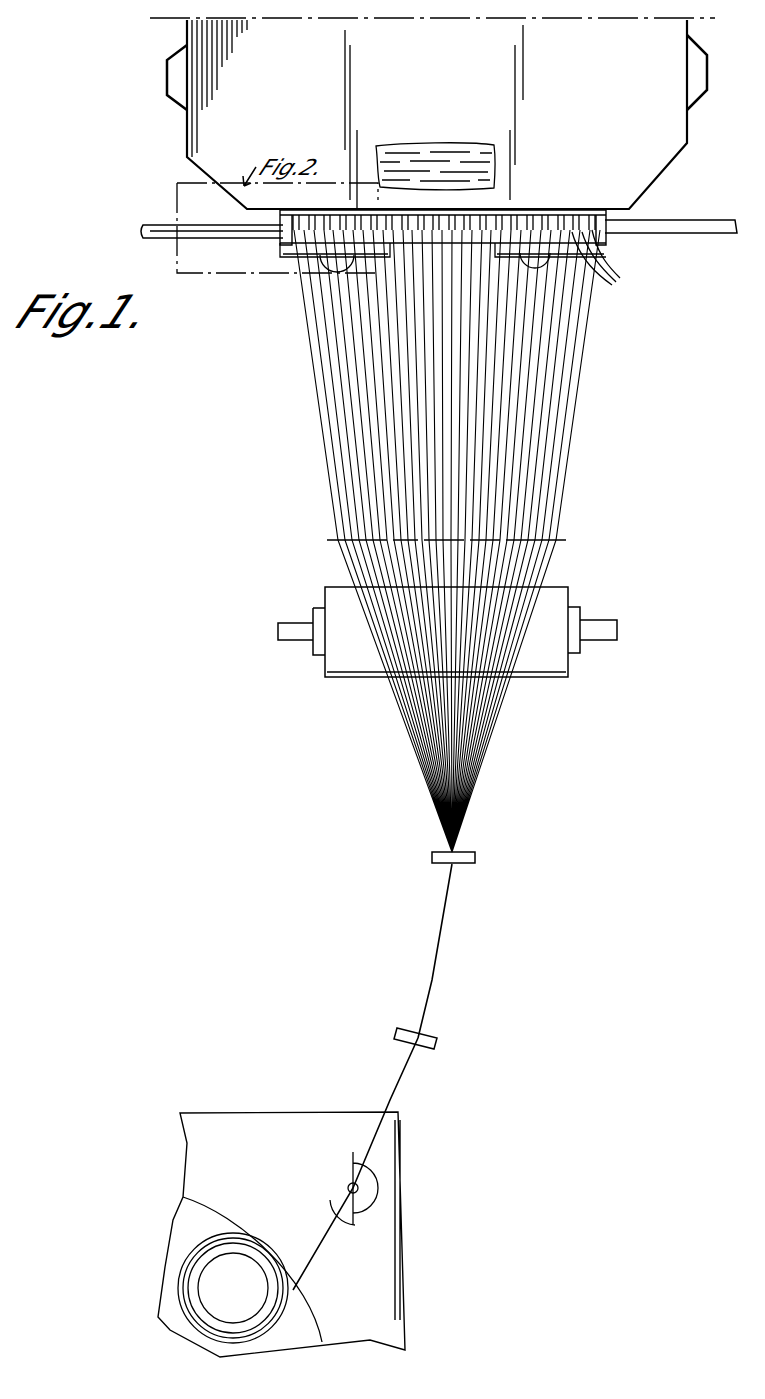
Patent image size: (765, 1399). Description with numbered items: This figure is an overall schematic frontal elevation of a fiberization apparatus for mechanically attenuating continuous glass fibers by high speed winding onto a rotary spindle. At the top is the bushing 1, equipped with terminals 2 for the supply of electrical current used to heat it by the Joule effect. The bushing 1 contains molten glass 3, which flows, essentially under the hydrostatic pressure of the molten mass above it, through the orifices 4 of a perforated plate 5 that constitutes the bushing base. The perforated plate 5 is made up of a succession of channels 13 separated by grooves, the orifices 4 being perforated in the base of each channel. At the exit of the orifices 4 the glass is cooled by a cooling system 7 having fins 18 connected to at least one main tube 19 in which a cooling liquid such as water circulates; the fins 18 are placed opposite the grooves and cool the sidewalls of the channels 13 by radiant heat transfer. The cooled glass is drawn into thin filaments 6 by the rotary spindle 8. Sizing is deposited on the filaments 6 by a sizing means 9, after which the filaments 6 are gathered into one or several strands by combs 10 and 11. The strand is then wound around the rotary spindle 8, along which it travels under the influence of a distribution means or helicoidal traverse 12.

The bushing 1 is at (445, 70).
The terminals 2 is at (186, 92).
The molten glass 3 is at (447, 165).
The orifices 4 is at (602, 267).
The perforated plate 5 is at (640, 212).
The filaments 6 is at (398, 557).
The cooling system 7 is at (283, 240).
The rotary spindle 8 is at (228, 1253).
The sizing means 9 is at (342, 677).
The comb 10 is at (477, 858).
The comb 11 is at (440, 1044).
The helicoidal traverse 12 is at (342, 1177).
The channels 13 is at (538, 212).
The fins 18 is at (307, 230).
The main tube 19 is at (170, 227).